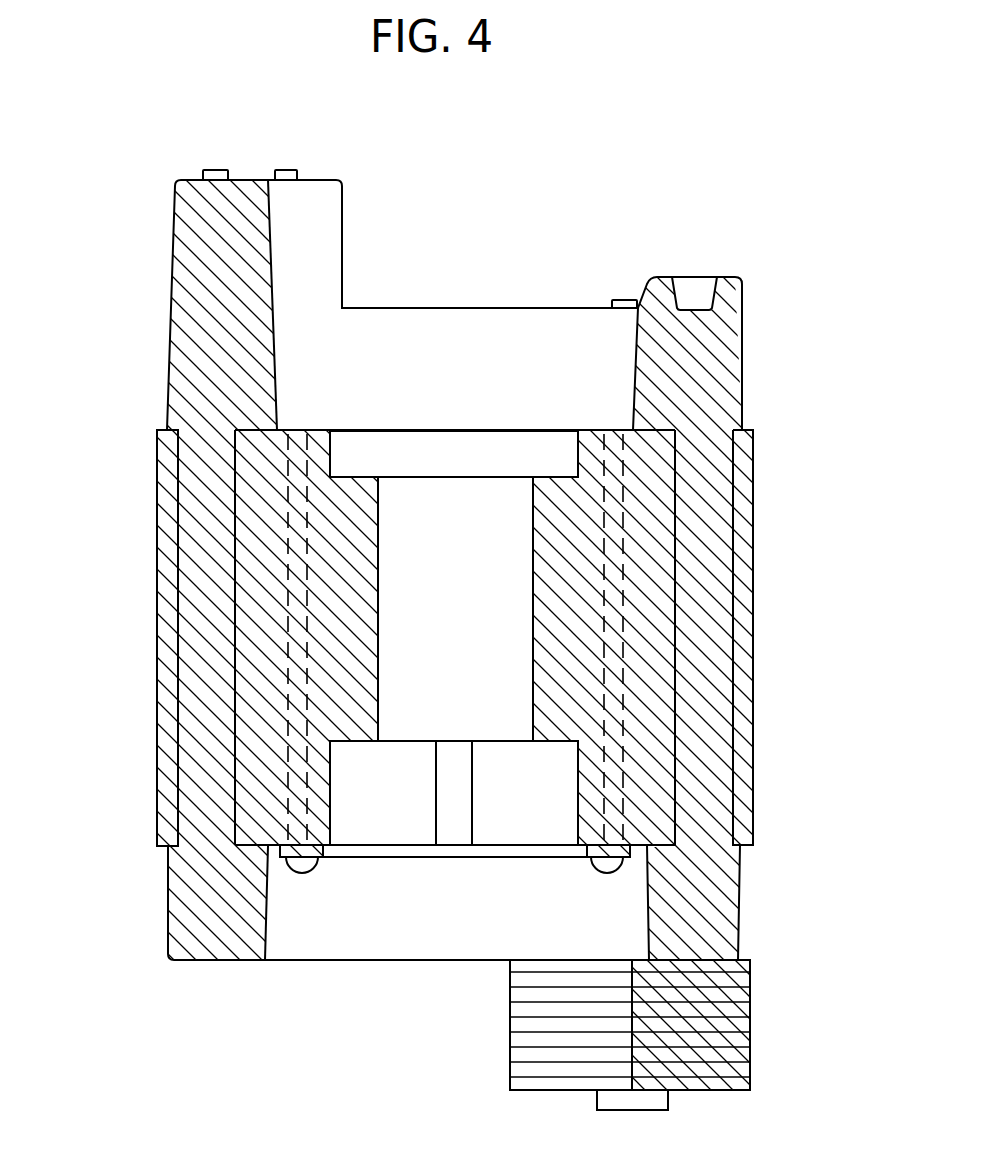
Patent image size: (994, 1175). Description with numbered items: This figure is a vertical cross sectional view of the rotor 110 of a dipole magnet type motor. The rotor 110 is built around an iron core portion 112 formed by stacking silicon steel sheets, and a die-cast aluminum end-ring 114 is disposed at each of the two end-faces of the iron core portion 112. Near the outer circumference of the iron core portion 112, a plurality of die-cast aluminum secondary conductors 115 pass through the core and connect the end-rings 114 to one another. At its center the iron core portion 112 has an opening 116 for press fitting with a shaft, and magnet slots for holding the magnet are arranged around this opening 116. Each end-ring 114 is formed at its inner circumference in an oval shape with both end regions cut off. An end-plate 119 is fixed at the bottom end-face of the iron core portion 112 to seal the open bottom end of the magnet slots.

The rotor 110 is at (712, 352).
The iron core portion 112 is at (660, 752).
The end-ring 114 is at (205, 305).
The secondary conductor 115 is at (200, 574).
The opening 116 is at (460, 518).
The end-plate 119 is at (322, 857).